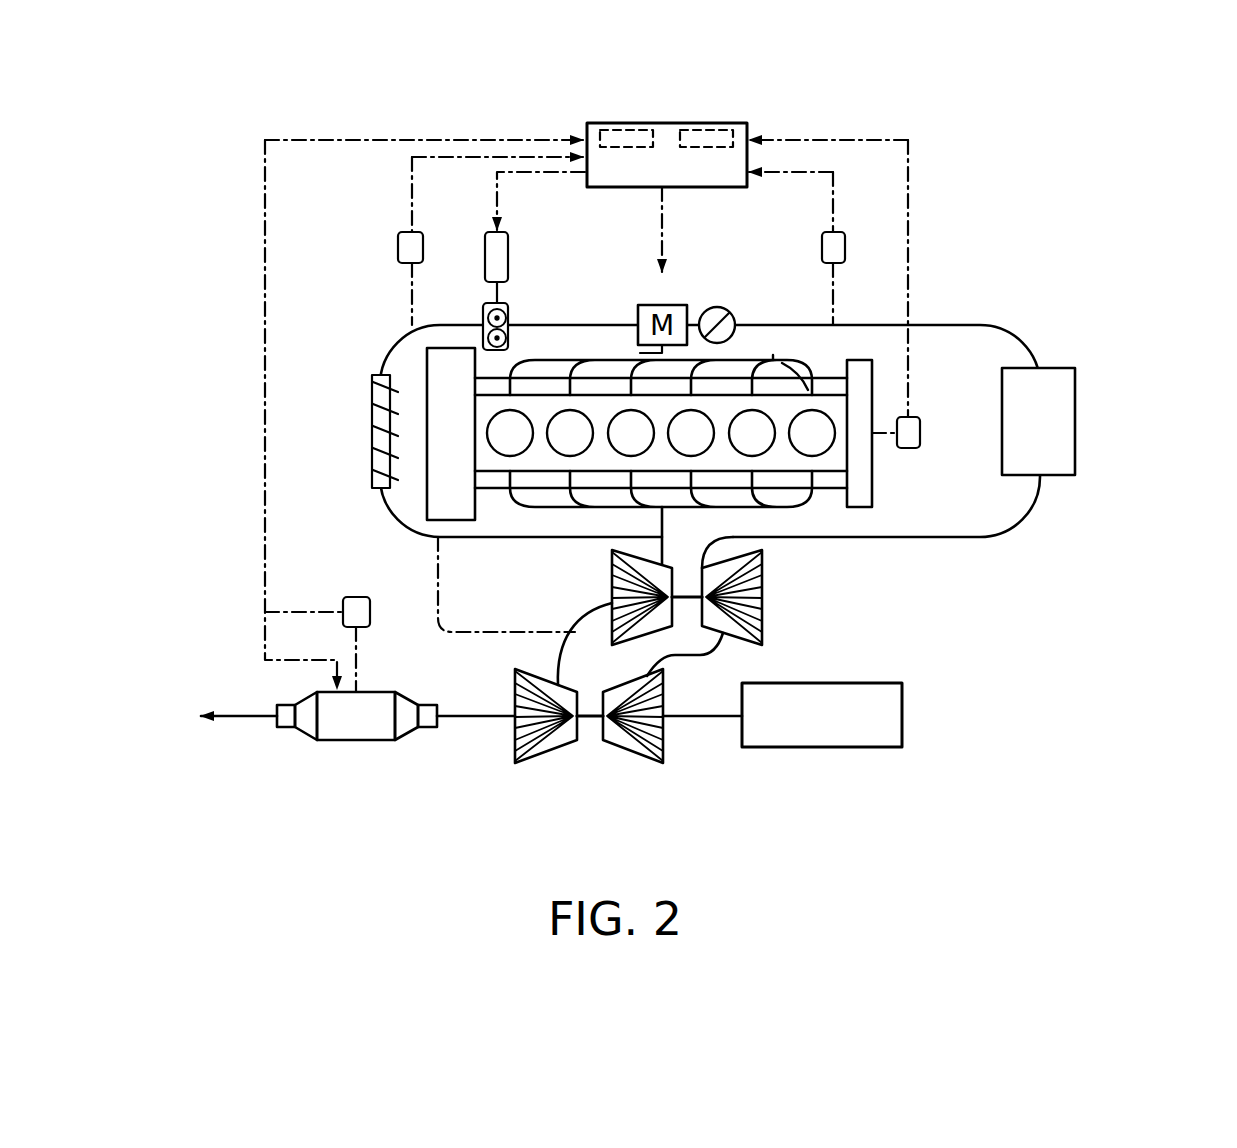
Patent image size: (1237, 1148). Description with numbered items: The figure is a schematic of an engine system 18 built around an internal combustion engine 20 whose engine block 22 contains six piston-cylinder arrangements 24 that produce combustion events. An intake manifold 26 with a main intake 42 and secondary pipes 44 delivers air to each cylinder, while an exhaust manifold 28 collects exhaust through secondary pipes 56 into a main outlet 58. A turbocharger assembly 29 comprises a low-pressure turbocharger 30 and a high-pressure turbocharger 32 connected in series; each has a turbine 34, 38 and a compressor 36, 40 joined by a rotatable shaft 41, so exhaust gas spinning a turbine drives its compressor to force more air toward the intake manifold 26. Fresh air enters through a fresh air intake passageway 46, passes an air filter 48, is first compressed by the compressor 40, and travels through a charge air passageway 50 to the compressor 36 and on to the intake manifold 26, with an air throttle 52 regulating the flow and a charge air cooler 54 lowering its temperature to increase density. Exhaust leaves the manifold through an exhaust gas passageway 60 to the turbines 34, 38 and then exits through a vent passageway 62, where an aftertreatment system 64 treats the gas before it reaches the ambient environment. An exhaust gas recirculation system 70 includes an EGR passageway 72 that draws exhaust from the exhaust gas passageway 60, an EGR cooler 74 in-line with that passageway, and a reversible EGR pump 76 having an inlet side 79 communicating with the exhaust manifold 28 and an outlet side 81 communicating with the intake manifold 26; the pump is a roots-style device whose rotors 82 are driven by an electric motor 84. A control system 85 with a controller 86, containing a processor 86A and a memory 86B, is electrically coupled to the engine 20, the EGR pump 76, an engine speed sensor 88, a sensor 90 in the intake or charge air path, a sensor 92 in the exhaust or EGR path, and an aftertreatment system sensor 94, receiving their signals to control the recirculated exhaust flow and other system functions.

The engine system 18 is at (1132, 150).
The internal combustion engine 20 is at (921, 472).
The engine block 22 is at (872, 475).
The piston-cylinder arrangements 24 is at (499, 446).
The intake manifold 26 is at (816, 359).
The exhaust manifold 28 is at (541, 515).
The turbocharger assembly 29 is at (546, 640).
The low-pressure turbocharger 30 is at (498, 791).
The high-pressure turbocharger 32 is at (593, 593).
The turbine 34 is at (612, 570).
The compressor 36 is at (762, 580).
The turbine 38 is at (515, 735).
The compressor 40 is at (668, 688).
The rotatable shaft 41 is at (694, 601).
The main intake 42 is at (640, 353).
The secondary pipes 44 is at (782, 358).
The fresh air intake passageway 46 is at (699, 718).
The air filter 48 is at (820, 747).
The charge air passageway 50 is at (960, 325).
The air throttle 52 is at (730, 307).
The charge air cooler 54 is at (1075, 398).
The secondary pipes 56 is at (795, 507).
The main outlet 58 is at (662, 520).
The exhaust gas passageway 60 is at (667, 562).
The vent passageway 62 is at (243, 718).
The aftertreatment system 64 is at (356, 740).
The exhaust gas recirculation system 70 is at (344, 333).
The EGR passageway 72 is at (578, 325).
The EGR cooler 74 is at (372, 408).
The EGR pump 76 is at (547, 272).
The inlet side 79 is at (480, 312).
The outlet side 81 is at (519, 310).
The rotors 82 is at (508, 310).
The electric motor 84 is at (485, 255).
The control system 85 is at (821, 106).
The controller 86 is at (705, 187).
The processor 86A is at (632, 125).
The memory 86B is at (715, 125).
The engine speed sensor 88 is at (915, 417).
The sensor 90 is at (845, 248).
The sensor 92 is at (398, 248).
The aftertreatment system sensor 94 is at (370, 605).